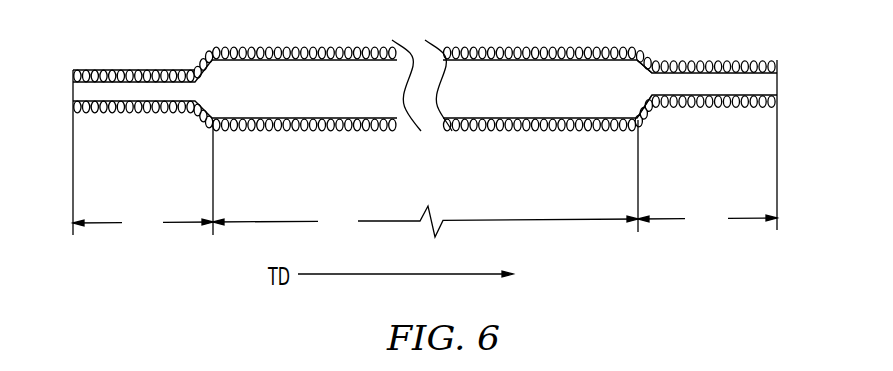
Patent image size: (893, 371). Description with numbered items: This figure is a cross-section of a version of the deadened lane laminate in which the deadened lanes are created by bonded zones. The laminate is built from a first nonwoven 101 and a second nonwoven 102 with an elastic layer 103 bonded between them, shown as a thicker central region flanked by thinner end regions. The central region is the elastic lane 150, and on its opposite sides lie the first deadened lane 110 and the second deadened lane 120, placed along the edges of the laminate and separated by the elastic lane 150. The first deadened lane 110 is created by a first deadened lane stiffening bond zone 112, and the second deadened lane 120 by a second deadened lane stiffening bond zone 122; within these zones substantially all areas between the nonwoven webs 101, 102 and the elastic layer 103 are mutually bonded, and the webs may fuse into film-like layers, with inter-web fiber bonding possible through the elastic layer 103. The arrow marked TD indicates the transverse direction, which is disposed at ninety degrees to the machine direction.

The first nonwoven 101 is at (753, 63).
The second nonwoven 102 is at (718, 98).
The elastic layer 103 is at (297, 75).
The first deadened lane stiffening bond zone 112 is at (123, 77).
The second deadened lane stiffening bond zone 122 is at (685, 63).
The first deadened lane 110 is at (143, 175).
The elastic lane 150 is at (425, 221).
The second deadened lane 120 is at (707, 146).